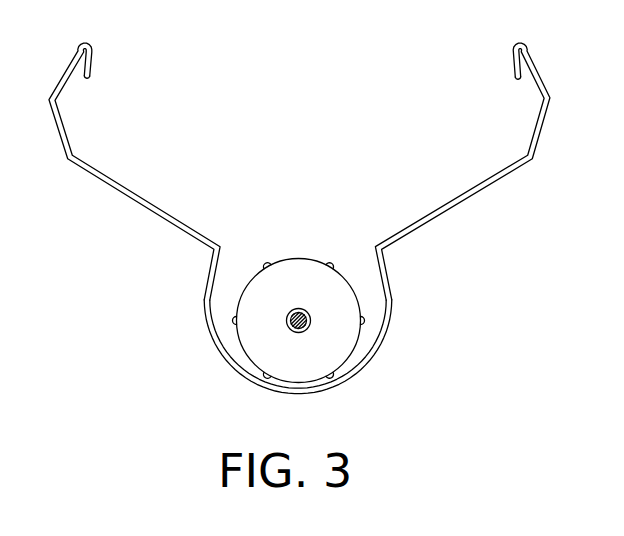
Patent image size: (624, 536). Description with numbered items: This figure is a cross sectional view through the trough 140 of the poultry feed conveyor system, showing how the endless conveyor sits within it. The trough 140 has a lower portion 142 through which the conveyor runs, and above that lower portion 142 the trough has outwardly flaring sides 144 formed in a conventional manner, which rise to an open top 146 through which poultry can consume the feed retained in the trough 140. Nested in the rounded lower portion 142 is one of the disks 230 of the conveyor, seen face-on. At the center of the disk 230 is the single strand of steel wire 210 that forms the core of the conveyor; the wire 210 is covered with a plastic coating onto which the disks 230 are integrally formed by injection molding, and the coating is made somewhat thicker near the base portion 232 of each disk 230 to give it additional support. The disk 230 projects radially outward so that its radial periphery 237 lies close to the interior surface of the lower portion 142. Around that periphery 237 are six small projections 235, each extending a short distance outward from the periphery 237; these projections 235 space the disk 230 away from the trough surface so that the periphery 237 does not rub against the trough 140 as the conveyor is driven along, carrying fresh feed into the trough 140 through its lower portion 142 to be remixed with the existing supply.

The trough 140 is at (164, 248).
The lower portion of the trough 142 is at (222, 358).
The outwardly flaring sides 144 is at (472, 200).
The open top 146 is at (308, 63).
The wire 210 is at (288, 328).
The disk 230 is at (362, 290).
The base portion of the disk 232 is at (323, 345).
The projections 235 is at (364, 318).
The radial periphery 237 is at (357, 350).